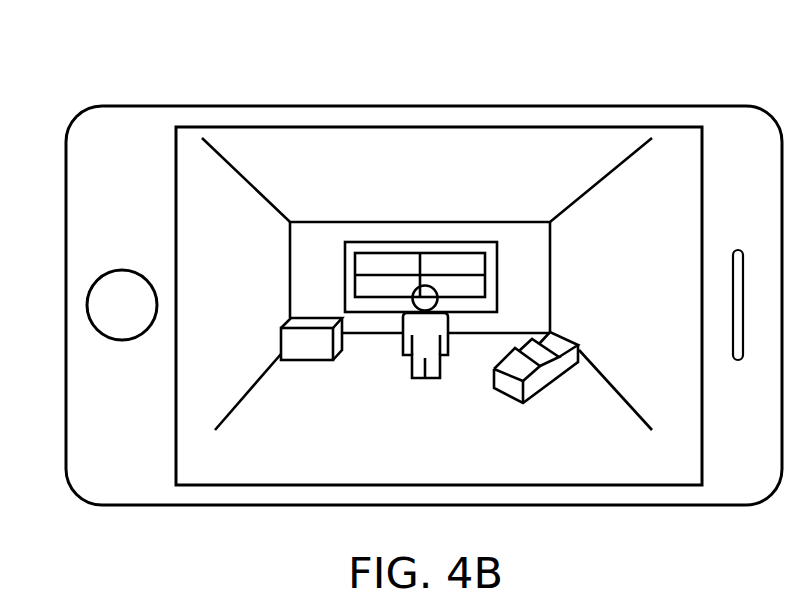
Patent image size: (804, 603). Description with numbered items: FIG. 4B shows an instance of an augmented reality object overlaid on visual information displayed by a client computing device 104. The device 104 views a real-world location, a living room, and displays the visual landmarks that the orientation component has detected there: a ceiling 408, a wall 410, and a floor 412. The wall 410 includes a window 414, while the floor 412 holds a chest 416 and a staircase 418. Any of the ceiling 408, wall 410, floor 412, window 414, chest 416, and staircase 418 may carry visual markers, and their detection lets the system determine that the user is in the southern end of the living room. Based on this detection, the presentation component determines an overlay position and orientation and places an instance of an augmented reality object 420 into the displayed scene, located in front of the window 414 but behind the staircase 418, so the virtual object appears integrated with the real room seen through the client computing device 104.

The client computing device 104 is at (113, 63).
The ceiling 408 is at (428, 213).
The wall 410 is at (540, 293).
The floor 412 is at (341, 433).
The window 414 is at (345, 278).
The chest 416 is at (235, 349).
The staircase 418 is at (578, 366).
The augmented reality object 420 is at (413, 378).